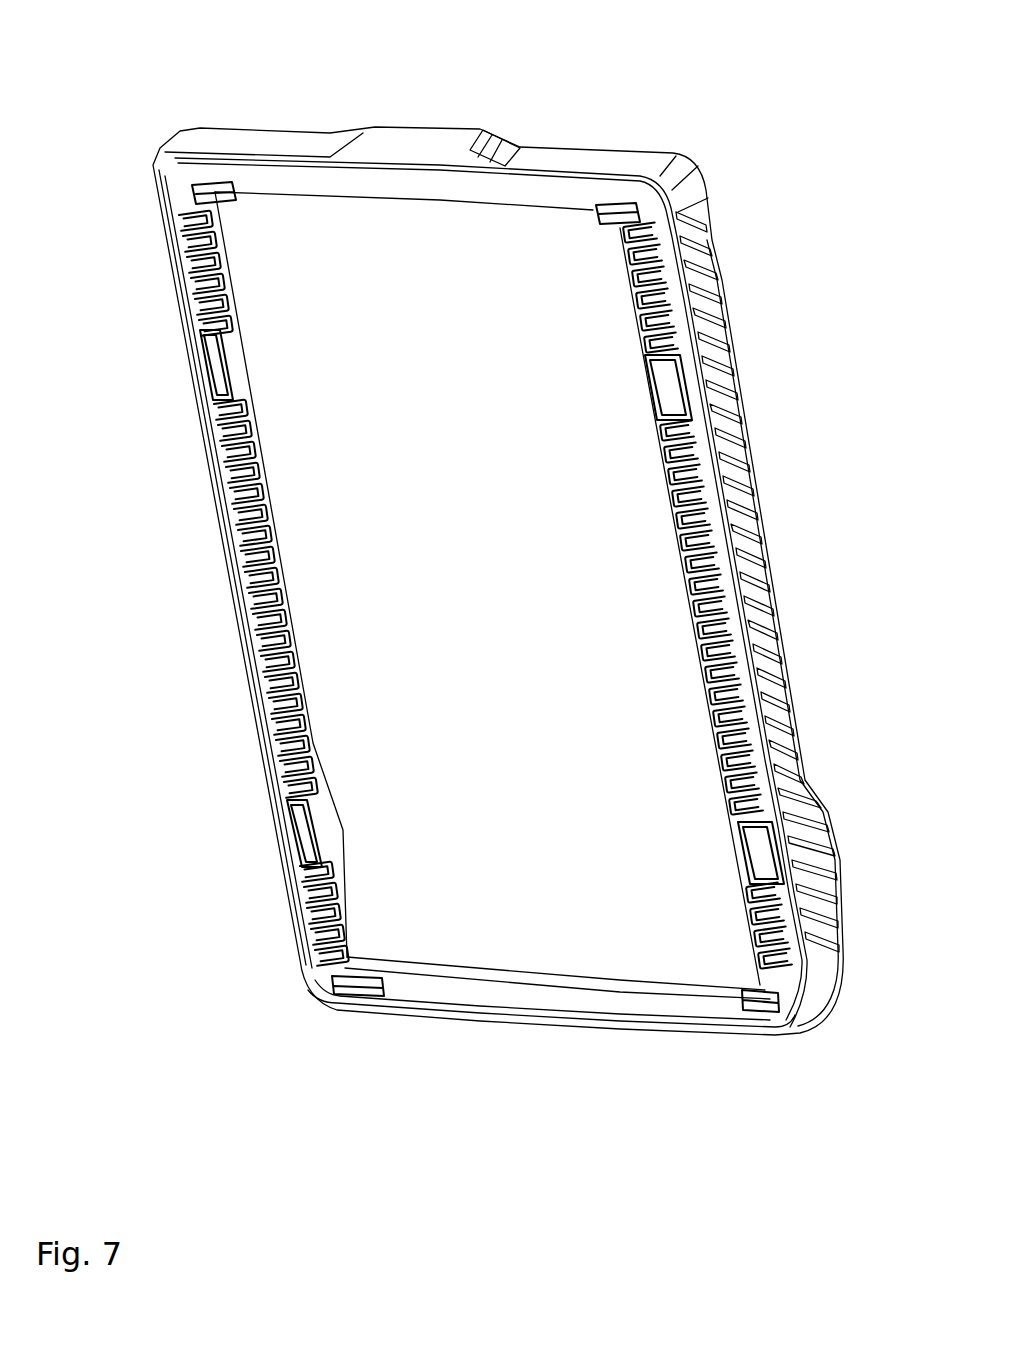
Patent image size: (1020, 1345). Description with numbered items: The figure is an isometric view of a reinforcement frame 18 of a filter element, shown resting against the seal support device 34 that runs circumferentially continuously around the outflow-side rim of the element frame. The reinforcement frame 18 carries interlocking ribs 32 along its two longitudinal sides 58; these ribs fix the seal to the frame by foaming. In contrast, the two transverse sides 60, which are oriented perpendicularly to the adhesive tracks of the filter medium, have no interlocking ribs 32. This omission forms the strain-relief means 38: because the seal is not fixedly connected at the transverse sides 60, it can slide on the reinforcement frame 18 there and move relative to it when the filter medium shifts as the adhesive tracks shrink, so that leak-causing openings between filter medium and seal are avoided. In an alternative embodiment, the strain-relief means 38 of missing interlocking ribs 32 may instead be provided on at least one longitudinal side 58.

The reinforcement frame 18 is at (589, 198).
The interlocking ribs 32 is at (645, 303).
The seal support device 34 is at (747, 443).
The strain-relief means 38 is at (430, 182).
The longitudinal side 58 is at (209, 548).
The transverse side 60 is at (329, 126).